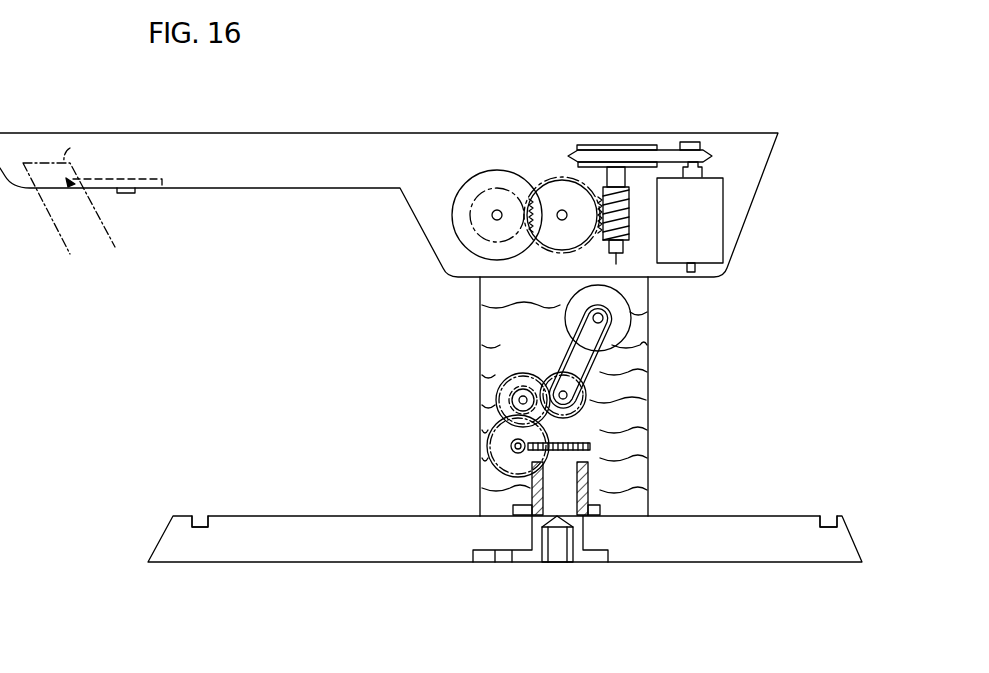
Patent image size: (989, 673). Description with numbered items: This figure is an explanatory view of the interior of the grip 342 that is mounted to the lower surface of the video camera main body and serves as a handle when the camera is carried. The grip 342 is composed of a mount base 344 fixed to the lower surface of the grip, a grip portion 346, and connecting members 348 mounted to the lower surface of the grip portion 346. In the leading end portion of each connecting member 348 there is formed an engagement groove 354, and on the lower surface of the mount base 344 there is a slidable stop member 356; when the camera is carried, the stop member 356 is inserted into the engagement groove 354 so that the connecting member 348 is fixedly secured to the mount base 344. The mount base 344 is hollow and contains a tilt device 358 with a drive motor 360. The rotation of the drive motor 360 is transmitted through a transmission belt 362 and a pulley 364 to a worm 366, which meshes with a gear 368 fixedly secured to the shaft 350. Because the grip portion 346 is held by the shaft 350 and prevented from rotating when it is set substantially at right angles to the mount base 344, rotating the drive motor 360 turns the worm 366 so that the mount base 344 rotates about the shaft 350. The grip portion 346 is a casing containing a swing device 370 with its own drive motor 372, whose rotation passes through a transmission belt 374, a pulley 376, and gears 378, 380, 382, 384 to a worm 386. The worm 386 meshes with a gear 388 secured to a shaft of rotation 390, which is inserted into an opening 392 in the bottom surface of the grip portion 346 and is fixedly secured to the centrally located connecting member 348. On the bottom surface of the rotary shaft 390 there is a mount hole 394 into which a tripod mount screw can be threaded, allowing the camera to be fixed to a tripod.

The grip 342 is at (713, 119).
The mount base 344 is at (395, 133).
The grip portion 346 is at (480, 345).
The connecting member 348 is at (58, 233).
The shaft 350 is at (560, 210).
The engagement groove 354 is at (80, 134).
The stop member 356 is at (125, 195).
The tilt device 358 is at (735, 185).
The drive motor 360 is at (705, 242).
The transmission belt 362 is at (668, 153).
The pulley 364 is at (636, 146).
The worm 366 is at (615, 188).
The gear 368 is at (537, 202).
The swing device 370 is at (622, 389).
The drive motor 372 is at (648, 310).
The transmission belt 374 is at (648, 368).
The pulley 376 is at (648, 432).
The gear 378 is at (548, 372).
The gear 380 is at (498, 392).
The gear 382 is at (512, 402).
The gear 384 is at (492, 447).
The worm 386 is at (500, 460).
The gear 388 is at (648, 458).
The shaft of rotation 390 is at (648, 490).
The opening 392 is at (510, 490).
The mount hole 394 is at (557, 562).